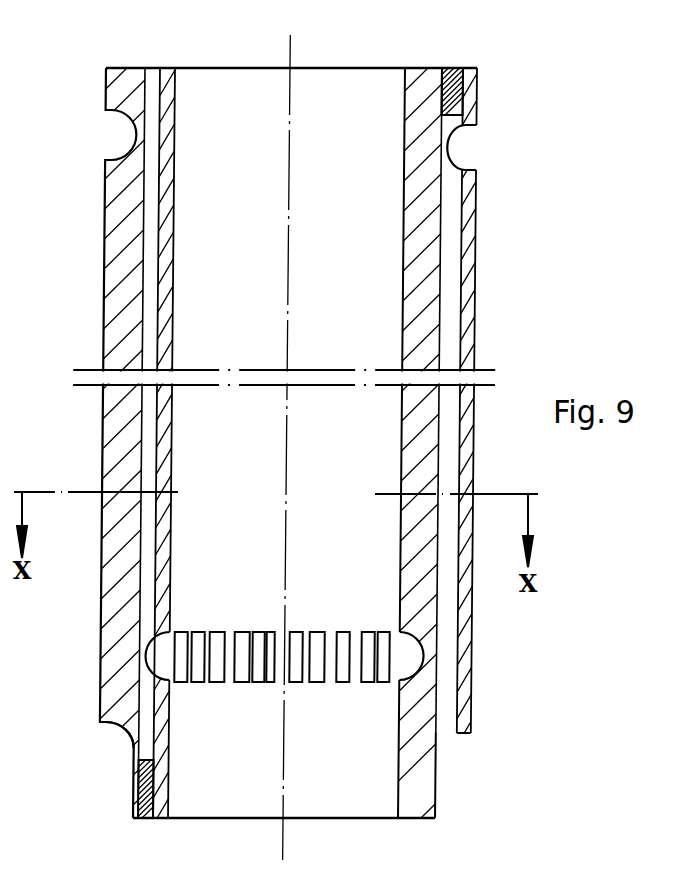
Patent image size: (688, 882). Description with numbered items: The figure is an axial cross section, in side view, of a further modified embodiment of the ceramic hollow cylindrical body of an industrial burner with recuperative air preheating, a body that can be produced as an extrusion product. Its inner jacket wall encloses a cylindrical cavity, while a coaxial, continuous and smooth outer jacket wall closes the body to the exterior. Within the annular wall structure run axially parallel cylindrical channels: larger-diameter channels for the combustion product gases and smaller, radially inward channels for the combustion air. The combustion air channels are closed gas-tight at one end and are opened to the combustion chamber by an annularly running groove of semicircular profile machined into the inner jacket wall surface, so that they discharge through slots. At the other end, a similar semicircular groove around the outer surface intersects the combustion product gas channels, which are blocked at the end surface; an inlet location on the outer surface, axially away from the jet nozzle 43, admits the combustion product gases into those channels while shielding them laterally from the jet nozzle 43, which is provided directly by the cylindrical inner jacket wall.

The jet nozzle 43 is at (330, 820).